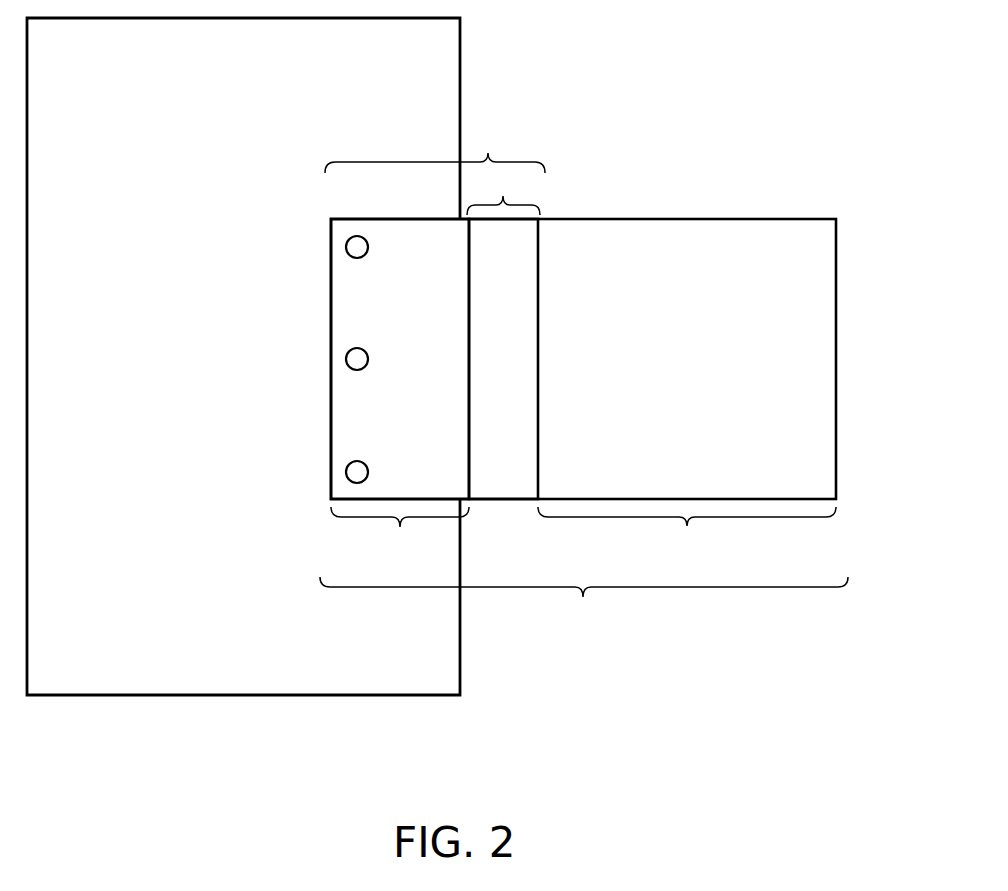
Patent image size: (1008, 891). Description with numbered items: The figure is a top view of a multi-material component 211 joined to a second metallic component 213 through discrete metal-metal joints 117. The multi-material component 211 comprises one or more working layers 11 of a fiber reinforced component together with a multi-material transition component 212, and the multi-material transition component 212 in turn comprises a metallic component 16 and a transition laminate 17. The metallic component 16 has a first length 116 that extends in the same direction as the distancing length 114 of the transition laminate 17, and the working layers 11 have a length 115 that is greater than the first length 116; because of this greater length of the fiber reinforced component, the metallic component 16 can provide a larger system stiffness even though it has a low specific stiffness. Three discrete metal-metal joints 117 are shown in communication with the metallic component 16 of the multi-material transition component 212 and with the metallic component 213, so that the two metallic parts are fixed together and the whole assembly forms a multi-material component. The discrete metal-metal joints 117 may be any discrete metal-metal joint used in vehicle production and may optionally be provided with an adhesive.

The working layer 11 is at (813, 317).
The metallic component 16 is at (384, 233).
The transition laminate 17 is at (500, 488).
The distancing length 114 is at (503, 190).
The length 115 is at (687, 535).
The first length 116 is at (400, 533).
The discrete metal-metal joints 117 is at (348, 247).
The multi-material component 211 is at (584, 606).
The multi-material transition component 212 is at (435, 148).
The metallic component 213 is at (410, 88).